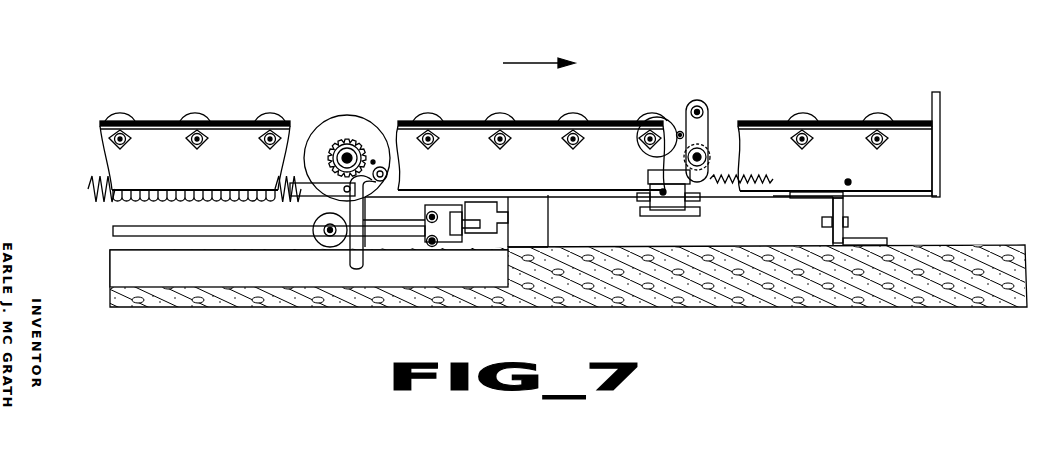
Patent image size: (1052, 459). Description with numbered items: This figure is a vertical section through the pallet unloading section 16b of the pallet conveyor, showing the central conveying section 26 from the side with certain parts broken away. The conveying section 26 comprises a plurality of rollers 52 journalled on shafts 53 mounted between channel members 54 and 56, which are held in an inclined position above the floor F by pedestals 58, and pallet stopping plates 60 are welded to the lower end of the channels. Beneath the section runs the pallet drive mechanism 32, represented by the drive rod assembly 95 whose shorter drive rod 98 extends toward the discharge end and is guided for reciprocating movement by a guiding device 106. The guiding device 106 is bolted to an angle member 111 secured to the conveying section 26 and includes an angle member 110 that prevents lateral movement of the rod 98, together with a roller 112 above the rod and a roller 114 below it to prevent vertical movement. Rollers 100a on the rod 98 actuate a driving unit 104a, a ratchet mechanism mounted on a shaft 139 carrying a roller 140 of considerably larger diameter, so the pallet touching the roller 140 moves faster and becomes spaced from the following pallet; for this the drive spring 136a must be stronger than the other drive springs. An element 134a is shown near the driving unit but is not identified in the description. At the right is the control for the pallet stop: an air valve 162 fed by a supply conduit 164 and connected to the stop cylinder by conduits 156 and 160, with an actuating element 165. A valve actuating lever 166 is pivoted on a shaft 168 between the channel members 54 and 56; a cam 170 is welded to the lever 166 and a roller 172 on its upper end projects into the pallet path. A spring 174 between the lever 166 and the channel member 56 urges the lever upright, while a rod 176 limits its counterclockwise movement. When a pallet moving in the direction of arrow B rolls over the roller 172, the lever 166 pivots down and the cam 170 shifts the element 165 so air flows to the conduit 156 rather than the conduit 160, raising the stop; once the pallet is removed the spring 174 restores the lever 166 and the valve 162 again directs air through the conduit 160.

The rollers 52 is at (195, 113).
The shafts 53 is at (197, 145).
The channel member 56 is at (245, 170).
The channel member 54 is at (760, 140).
The drive spring 136a is at (88, 190).
The link 134a is at (327, 197).
The pallet drive mechanism 32 is at (113, 229).
The drive rod 98 is at (173, 233).
The drive rod assembly 95 is at (308, 236).
The rollers 100a is at (326, 242).
The roller 140 is at (327, 133).
The shaft 139 is at (349, 156).
The driving unit 104a is at (373, 155).
The central conveying section 26 is at (440, 120).
The guiding device 106 is at (447, 206).
The angle member 111 is at (483, 199).
The roller 112 is at (424, 216).
The roller 114 is at (427, 245).
The angle member 110 is at (446, 230).
The pallet unloading section 16b is at (605, 120).
The rod 176 is at (679, 131).
The roller 172 is at (697, 101).
The valve actuating lever 166 is at (700, 137).
The cam 170 is at (707, 157).
The shaft 168 is at (708, 178).
The spring 174 is at (770, 180).
The actuating element 165 is at (657, 178).
The conduit 156 is at (640, 200).
The air valve 162 is at (660, 208).
The conduit 164 is at (664, 196).
The conduit 160 is at (686, 205).
The pedestals 58 is at (857, 238).
The pallet stopping plates 60 is at (940, 104).
The floor F is at (977, 245).
The arrow B is at (525, 63).